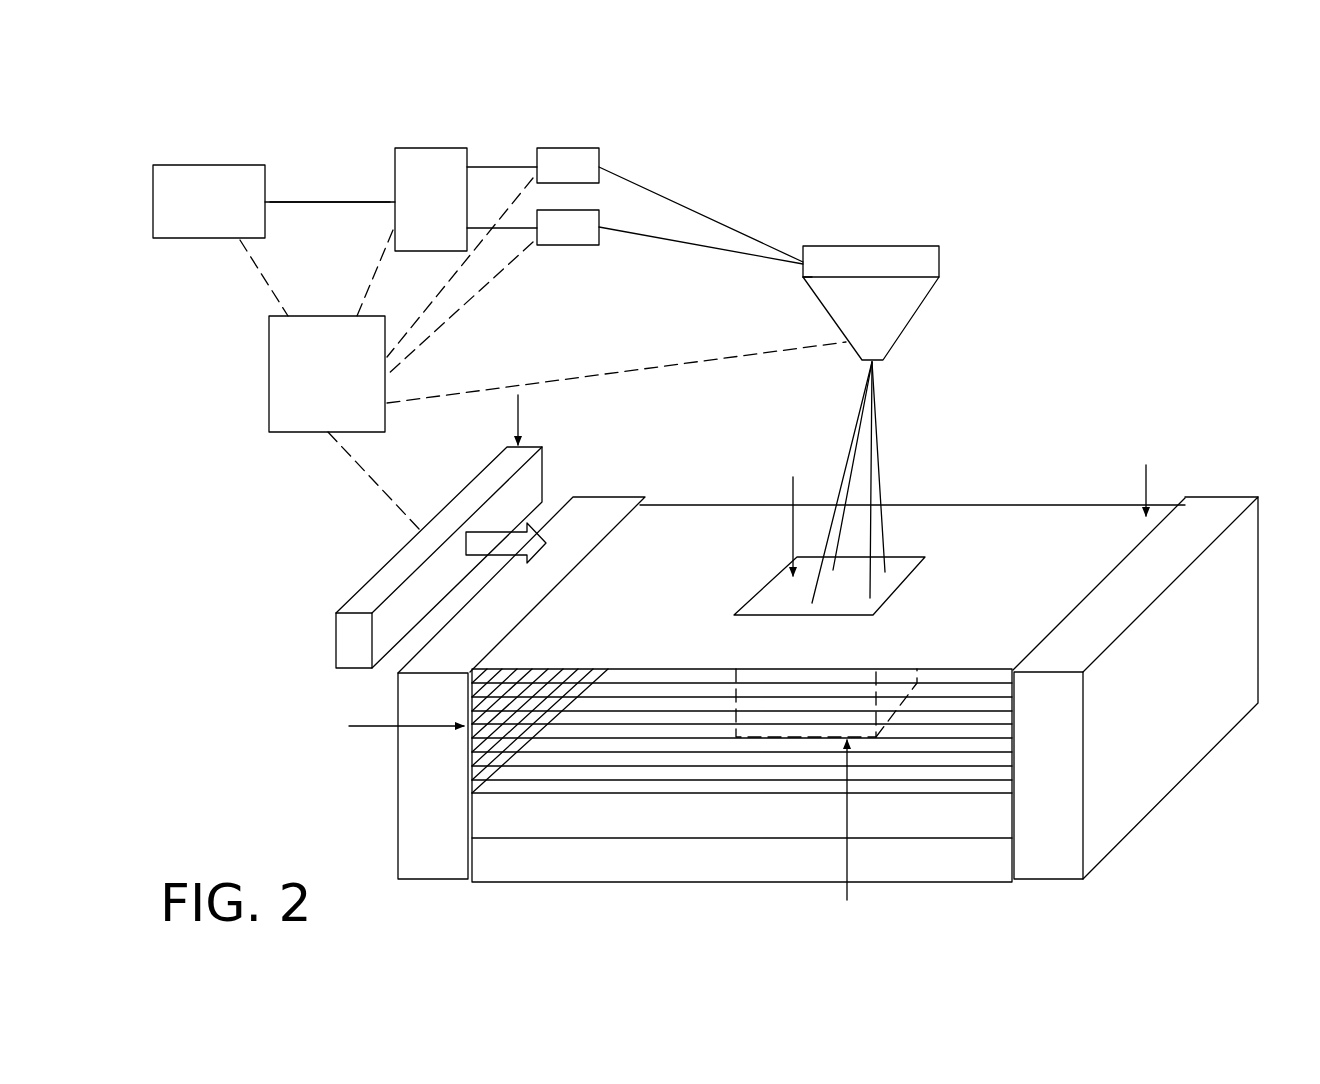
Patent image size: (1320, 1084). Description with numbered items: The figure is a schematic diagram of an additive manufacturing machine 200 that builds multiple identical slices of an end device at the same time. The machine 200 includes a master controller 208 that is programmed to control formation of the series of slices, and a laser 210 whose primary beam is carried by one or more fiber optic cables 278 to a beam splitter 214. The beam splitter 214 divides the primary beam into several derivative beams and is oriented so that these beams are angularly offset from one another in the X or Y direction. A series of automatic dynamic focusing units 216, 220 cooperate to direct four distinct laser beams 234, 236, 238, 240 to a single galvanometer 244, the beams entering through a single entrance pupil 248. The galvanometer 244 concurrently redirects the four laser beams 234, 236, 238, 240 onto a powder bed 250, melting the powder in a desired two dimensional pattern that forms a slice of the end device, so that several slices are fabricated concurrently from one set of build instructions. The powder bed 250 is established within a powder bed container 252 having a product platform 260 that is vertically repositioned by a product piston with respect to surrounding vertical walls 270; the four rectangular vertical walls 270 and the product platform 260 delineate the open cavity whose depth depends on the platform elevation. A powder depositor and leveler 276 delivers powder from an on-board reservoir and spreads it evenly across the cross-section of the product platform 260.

The additive manufacturing machine 200 is at (1084, 233).
The master controller 208 is at (282, 373).
The laser 210 is at (217, 178).
The beam splitter 214 is at (430, 148).
The automatic dynamic focusing unit 216 is at (565, 148).
The automatic dynamic focusing unit 220 is at (565, 237).
The laser beam 234 is at (640, 180).
The laser beam 236 is at (872, 483).
The laser beam 238 is at (642, 237).
The laser beam 240 is at (847, 457).
The galvanometer 244 is at (907, 268).
The entrance pupil 248 is at (802, 268).
The powder bed 250 is at (902, 560).
The powder bed container 252 is at (1183, 497).
The product platform 260 is at (736, 738).
The vertical walls 270 is at (423, 820).
The powder depositor and leveler 276 is at (363, 605).
The fiber optic cable 278 is at (314, 202).